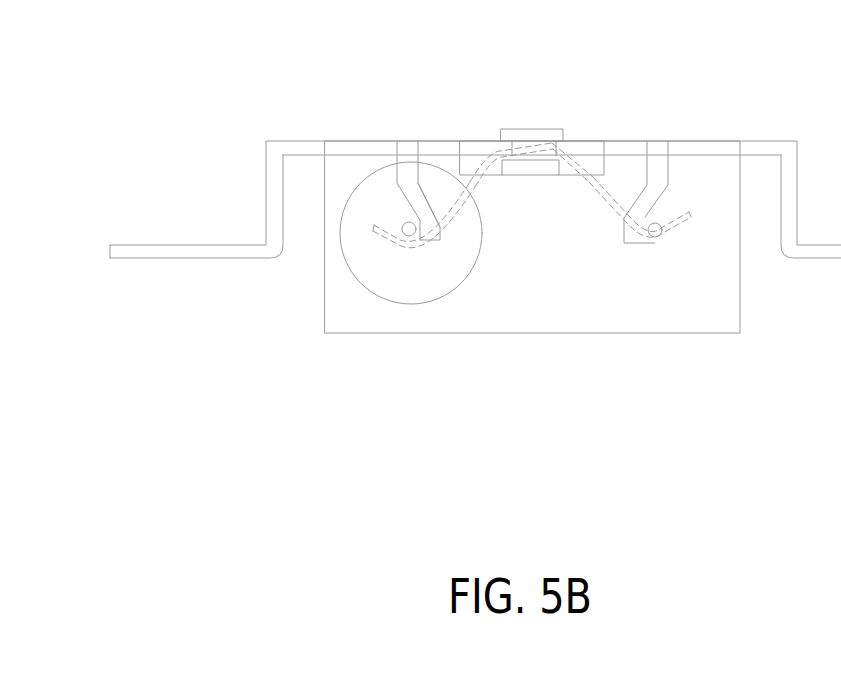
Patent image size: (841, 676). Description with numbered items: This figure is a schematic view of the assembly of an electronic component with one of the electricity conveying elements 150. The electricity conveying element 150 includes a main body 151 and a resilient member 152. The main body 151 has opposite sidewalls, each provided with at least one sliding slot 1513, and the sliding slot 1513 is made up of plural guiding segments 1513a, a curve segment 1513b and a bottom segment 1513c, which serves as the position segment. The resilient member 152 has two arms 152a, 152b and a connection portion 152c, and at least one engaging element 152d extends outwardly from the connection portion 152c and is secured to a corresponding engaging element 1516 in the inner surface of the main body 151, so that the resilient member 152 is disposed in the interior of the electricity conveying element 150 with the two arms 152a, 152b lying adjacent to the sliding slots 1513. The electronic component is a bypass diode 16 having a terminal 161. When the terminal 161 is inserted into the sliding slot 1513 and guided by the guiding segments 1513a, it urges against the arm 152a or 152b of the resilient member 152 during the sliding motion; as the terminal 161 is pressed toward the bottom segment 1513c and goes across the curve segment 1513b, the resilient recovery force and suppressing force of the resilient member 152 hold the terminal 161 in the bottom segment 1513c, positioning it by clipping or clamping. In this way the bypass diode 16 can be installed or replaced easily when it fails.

The electricity conveying element 150 is at (708, 120).
The main body 151 is at (290, 142).
The sliding slot 1513 is at (491, 127).
The guiding segments 1513a is at (416, 210).
The curve segment 1513b is at (419, 219).
The bottom segment 1513c is at (422, 236).
The engaging element 1516 is at (519, 156).
The bypass diode 16 is at (372, 263).
The terminal 161 is at (409, 236).
The resilient member 152 is at (532, 288).
The arm 152a is at (453, 207).
The arm 152b is at (640, 275).
The connection portion 152c is at (556, 175).
The engaging element 152d is at (535, 157).